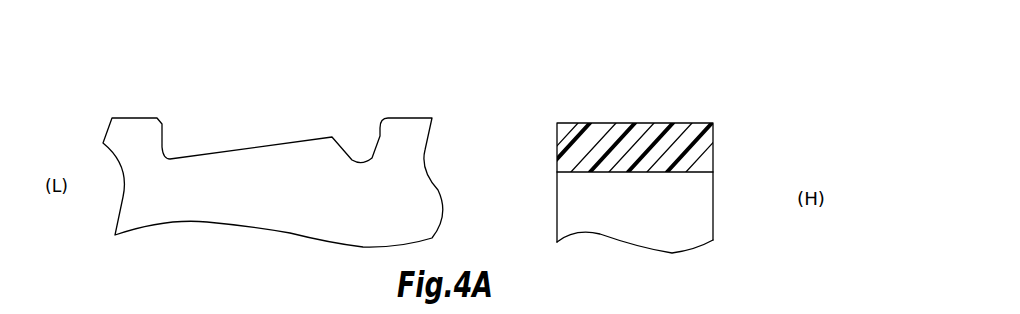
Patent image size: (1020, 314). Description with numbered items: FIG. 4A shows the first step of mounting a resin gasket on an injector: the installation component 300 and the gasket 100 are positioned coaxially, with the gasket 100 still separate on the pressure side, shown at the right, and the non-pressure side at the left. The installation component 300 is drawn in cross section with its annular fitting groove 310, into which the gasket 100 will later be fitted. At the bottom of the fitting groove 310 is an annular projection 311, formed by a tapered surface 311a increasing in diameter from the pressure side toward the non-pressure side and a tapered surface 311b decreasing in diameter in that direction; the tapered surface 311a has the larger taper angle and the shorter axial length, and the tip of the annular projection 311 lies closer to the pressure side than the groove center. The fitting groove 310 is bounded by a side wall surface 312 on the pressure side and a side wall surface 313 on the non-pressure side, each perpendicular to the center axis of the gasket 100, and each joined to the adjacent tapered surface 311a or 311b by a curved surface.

The gasket 100 is at (687, 124).
The installation component 300 is at (273, 182).
The fitting groove 310 is at (204, 141).
The annular projection 311 is at (314, 132).
The tapered surface 311a is at (347, 137).
The tapered surface 311b is at (242, 150).
The side wall surface 312 is at (380, 132).
The side wall surface 313 is at (171, 139).